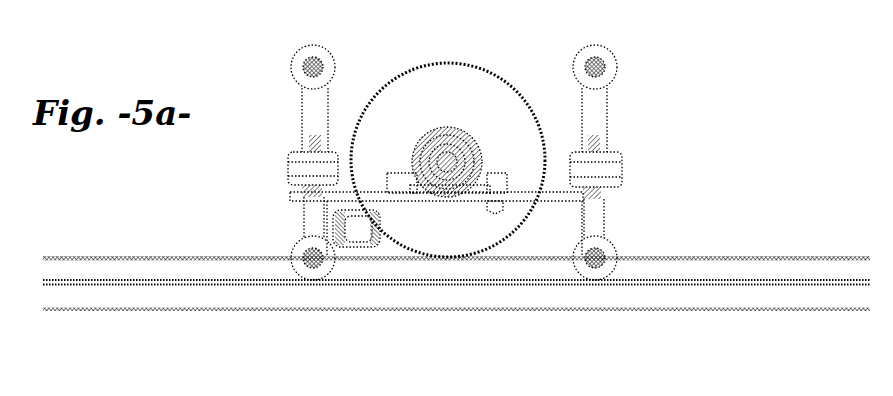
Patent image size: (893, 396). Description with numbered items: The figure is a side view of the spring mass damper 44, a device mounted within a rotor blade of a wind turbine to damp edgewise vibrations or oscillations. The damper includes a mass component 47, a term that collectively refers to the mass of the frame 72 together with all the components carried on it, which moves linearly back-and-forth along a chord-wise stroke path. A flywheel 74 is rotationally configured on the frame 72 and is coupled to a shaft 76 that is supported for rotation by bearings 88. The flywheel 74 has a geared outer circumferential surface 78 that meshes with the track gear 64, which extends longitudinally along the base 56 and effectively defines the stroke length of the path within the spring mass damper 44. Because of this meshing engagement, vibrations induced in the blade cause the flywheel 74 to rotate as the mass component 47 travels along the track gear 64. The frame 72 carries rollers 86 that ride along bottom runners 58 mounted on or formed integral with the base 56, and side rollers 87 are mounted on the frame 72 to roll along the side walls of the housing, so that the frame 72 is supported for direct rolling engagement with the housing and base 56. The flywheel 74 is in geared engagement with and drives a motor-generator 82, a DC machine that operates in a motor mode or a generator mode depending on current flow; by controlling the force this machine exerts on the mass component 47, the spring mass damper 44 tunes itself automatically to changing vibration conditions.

The spring mass damper 44 is at (728, 83).
The mass component 47 is at (268, 156).
The base 56 is at (150, 298).
The bottom runners 58 is at (505, 281).
The track gear 64 is at (232, 255).
The frame 72 is at (612, 162).
The flywheel 74 is at (448, 145).
The shaft 76 is at (453, 162).
The geared outer circumferential surface 78 is at (414, 72).
The motor-generator 82 is at (378, 225).
The rollers 86 is at (313, 67).
The side rollers 87 is at (622, 170).
The bearings 88 is at (420, 150).